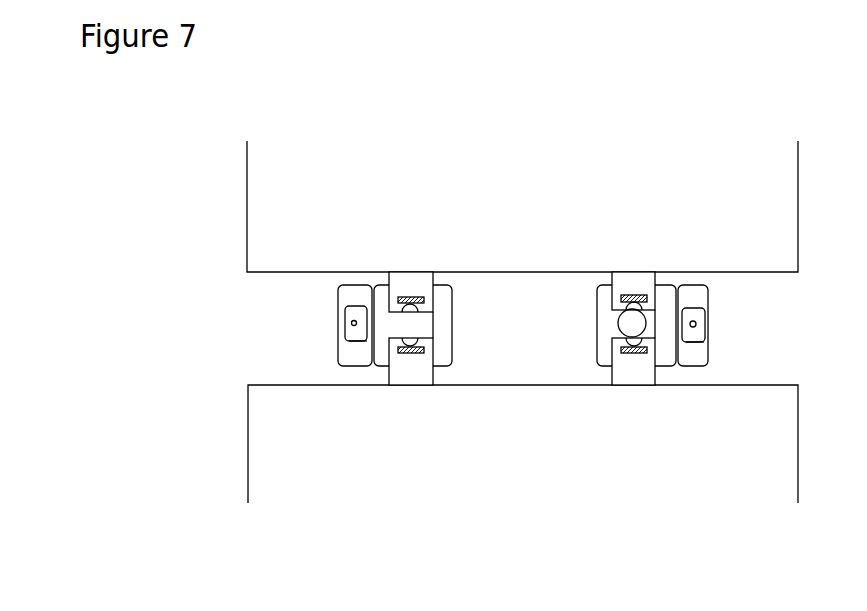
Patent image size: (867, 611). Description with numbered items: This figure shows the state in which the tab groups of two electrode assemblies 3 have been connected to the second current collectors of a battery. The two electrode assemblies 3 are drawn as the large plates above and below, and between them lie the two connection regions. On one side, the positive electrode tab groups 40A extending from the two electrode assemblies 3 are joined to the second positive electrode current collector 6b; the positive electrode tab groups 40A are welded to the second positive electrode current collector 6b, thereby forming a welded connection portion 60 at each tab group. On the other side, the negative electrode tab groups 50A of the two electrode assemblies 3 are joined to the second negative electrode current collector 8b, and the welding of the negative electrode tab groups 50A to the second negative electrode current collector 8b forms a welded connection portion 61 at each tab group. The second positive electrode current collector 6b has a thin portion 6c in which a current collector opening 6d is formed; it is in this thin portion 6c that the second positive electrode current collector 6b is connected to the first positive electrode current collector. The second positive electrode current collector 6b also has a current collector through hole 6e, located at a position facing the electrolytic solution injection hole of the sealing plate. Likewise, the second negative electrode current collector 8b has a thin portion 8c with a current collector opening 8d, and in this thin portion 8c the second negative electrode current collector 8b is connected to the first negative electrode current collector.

The electrode assembly 3 is at (760, 233).
The negative electrode tab group 50A is at (408, 284).
The positive electrode tab group 40A is at (632, 284).
The welded connection portion 61 is at (418, 298).
The welded connection portion 60 is at (622, 297).
The current collector through hole 6e is at (619, 319).
The second positive electrode current collector 6b is at (698, 297).
The current collector opening 6d is at (697, 324).
The thin portion 6c is at (697, 338).
The second negative electrode current collector 8b is at (355, 292).
The current collector opening 8d is at (352, 323).
The thin portion 8c is at (347, 336).